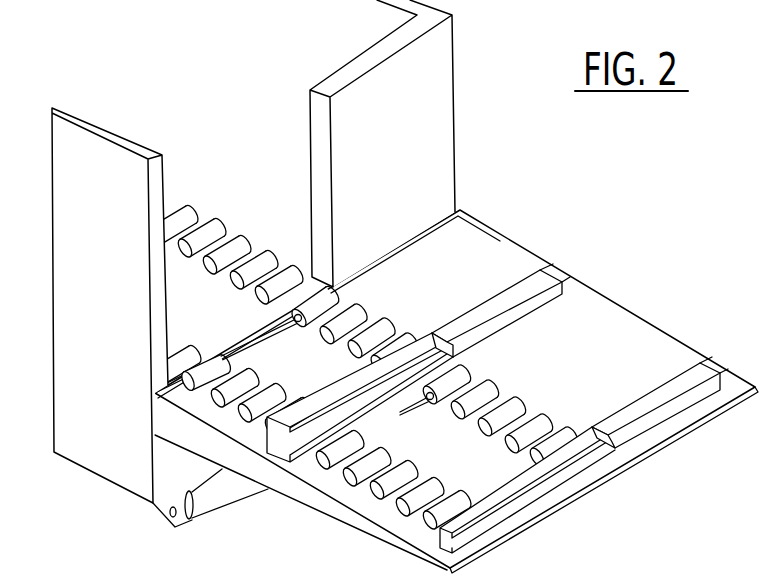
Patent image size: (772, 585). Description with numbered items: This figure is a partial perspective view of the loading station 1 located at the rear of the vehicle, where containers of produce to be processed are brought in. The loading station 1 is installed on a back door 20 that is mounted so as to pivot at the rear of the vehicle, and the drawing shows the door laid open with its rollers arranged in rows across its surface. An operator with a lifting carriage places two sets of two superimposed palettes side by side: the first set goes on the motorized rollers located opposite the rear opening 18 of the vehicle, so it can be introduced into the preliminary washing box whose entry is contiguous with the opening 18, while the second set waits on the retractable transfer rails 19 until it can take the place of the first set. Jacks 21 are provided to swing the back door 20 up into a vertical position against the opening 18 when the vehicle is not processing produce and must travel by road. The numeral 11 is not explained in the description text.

The loading station 1 is at (392, 286).
The rollers 11 is at (373, 490).
The rear opening 18 is at (193, 310).
The retractable transfer rails 19 is at (560, 264).
The back door 20 is at (659, 348).
The jacks 21 is at (240, 490).